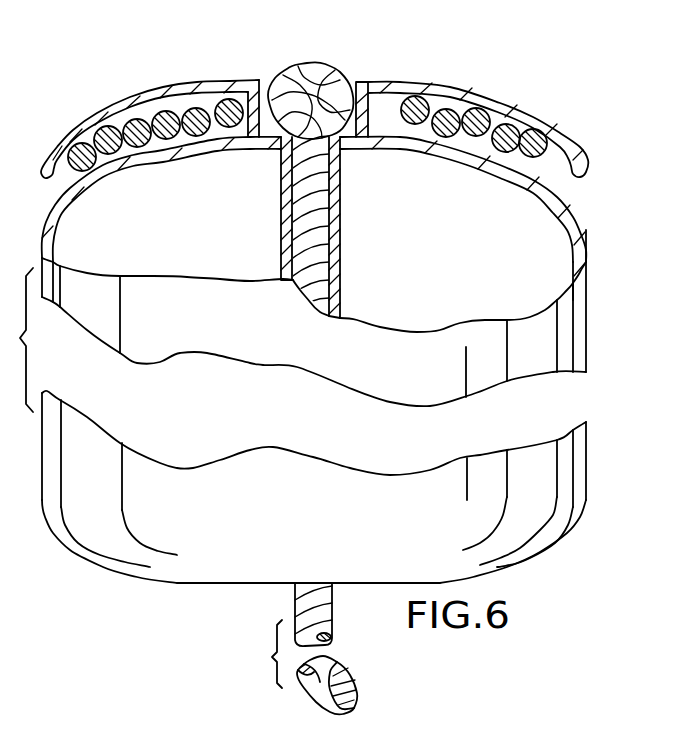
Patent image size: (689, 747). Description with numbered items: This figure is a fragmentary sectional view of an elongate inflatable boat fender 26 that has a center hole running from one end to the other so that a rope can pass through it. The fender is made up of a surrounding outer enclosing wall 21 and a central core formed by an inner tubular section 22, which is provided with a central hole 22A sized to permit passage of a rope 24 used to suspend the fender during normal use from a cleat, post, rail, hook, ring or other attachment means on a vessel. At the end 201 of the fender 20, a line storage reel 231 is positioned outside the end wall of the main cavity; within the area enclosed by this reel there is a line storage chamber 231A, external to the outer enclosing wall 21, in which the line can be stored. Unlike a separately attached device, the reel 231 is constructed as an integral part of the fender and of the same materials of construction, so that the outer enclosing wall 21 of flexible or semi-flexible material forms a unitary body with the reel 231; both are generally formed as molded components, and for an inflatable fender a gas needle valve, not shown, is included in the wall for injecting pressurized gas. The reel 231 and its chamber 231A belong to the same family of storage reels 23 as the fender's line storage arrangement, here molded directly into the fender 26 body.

The fender 20 is at (314, 360).
The end of the fender 201 is at (104, 178).
The outer enclosing wall 21 is at (586, 228).
The inner tubular section 22 is at (340, 245).
The central hole 22A is at (340, 192).
The bearing race 23 is at (318, 107).
The line storage chamber 231A is at (186, 100).
The line storage reel 231 is at (540, 110).
The rope 24 is at (292, 178).
The boat fender 26 is at (585, 309).